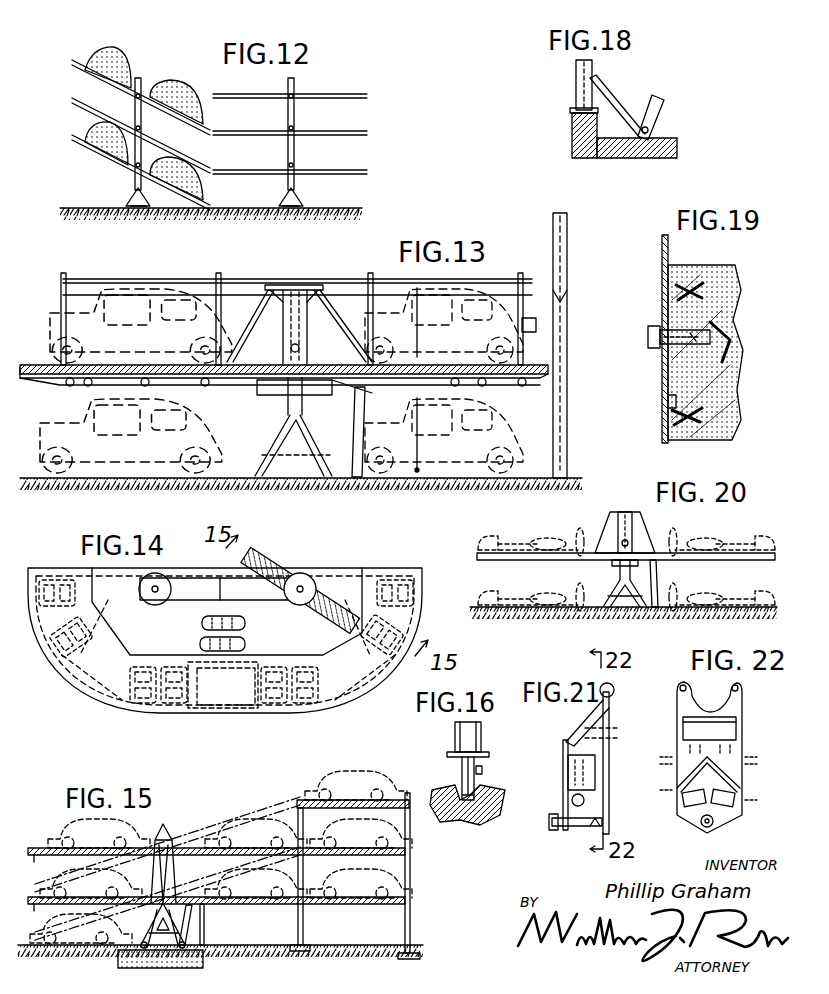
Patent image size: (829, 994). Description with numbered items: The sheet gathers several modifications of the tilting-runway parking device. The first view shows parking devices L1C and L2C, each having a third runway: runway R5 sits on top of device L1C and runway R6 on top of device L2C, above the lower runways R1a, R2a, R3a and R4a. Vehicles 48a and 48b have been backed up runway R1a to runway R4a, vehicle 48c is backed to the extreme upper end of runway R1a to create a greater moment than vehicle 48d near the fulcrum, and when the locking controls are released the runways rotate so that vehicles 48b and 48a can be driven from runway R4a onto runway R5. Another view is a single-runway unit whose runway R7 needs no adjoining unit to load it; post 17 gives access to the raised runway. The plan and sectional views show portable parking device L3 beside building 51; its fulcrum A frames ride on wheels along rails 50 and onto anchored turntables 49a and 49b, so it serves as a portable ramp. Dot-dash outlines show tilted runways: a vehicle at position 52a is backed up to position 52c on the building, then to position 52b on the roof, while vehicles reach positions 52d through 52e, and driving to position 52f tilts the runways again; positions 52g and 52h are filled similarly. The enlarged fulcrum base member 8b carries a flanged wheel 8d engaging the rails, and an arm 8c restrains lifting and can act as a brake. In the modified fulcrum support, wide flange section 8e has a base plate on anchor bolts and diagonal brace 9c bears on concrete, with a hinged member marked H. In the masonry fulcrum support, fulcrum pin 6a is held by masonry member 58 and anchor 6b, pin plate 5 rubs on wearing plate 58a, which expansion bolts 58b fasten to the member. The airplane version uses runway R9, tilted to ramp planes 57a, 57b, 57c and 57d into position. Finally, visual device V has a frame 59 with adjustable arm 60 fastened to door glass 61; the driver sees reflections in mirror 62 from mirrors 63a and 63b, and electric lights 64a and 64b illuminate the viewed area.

In FIG. 12, the vehicle parking device L1C is at (138, 78).
In FIG. 12, the vehicle parking device L2C is at (294, 82).
In FIG. 12, the runway R5 is at (72, 64).
In FIG. 12, the runway R2a is at (72, 102).
In FIG. 12, the runway R1a is at (72, 140).
In FIG. 12, the runway R6 is at (362, 98).
In FIG. 12, the runway R4a is at (362, 135).
In FIG. 12, the runway R3a is at (362, 174).
In FIG. 12, the vehicle 48a is at (160, 92).
In FIG. 12, the vehicle 48b is at (92, 62).
In FIG. 12, the vehicle 48c is at (203, 180).
In FIG. 12, the vehicle 48d is at (106, 156).
In FIG. 13, the post 17 is at (553, 220).
In FIG. 13, the single runway R7 is at (40, 368).
In FIG. 18, the fulcrum wide flange section 8e is at (576, 80).
In FIG. 18, the diagonal brace 9c is at (620, 100).
In FIG. 18, the hinged arm H is at (660, 114).
In FIG. 19, the pin plate 5 is at (668, 258).
In FIG. 19, the fulcrum pin 6a is at (700, 357).
In FIG. 19, the anchor 6b is at (731, 340).
In FIG. 19, the masonry building member 58 is at (734, 305).
In FIG. 19, the wearing plate 58a is at (665, 400).
In FIG. 19, the expansion bolts 58b is at (702, 285).
In FIG. 14, the building 51 is at (316, 714).
In FIG. 15, the building 51 is at (410, 910).
In FIG. 14, the rails 50 is at (196, 580).
In FIG. 16, the rails 50 is at (484, 814).
In FIG. 14, the turntable 49a is at (305, 578).
In FIG. 15, the turntable 49a is at (146, 932).
In FIG. 14, the turntable 49b is at (139, 589).
In FIG. 14, the parking device L3 is at (262, 556).
In FIG. 15, the parking device L3 is at (165, 840).
In FIG. 14, the vehicle position 52g is at (88, 640).
In FIG. 14, the vehicle position 52h is at (247, 623).
In FIG. 20, the runway R9 is at (478, 554).
In FIG. 20, the plane 57a is at (706, 578).
In FIG. 20, the plane 57b is at (545, 578).
In FIG. 20, the plane 57c is at (706, 522).
In FIG. 20, the plane 57d is at (545, 522).
In FIG. 15, the vehicle position 52a is at (118, 958).
In FIG. 15, the vehicle position 52b is at (328, 784).
In FIG. 15, the vehicle position 52c is at (361, 834).
In FIG. 15, the vehicle position 52d is at (361, 897).
In FIG. 15, the vehicle position 52e is at (256, 899).
In FIG. 15, the vehicle position 52f is at (52, 888).
In FIG. 16, the fulcrum base member 8b is at (455, 727).
In FIG. 16, the arm 8c is at (458, 776).
In FIG. 16, the flanged wheel 8d is at (482, 770).
In FIG. 21, the glass 61 is at (609, 762).
In FIG. 21, the frame 59 is at (563, 745).
In FIG. 22, the frame 59 is at (742, 752).
In FIG. 21, the mirror 62 is at (585, 721).
In FIG. 22, the mirror 62 is at (737, 729).
In FIG. 21, the mirror 63a is at (568, 765).
In FIG. 22, the mirror 63a is at (680, 787).
In FIG. 22, the mirror 63b is at (740, 782).
In FIG. 22, the electric light 64a is at (684, 803).
In FIG. 22, the electric light 64b is at (730, 806).
In FIG. 21, the adjustable arm 60 is at (575, 821).
In FIG. 22, the adjustable arm 60 is at (701, 825).
In FIG. 21, the visual device V is at (614, 691).
In FIG. 22, the visual device V is at (742, 702).